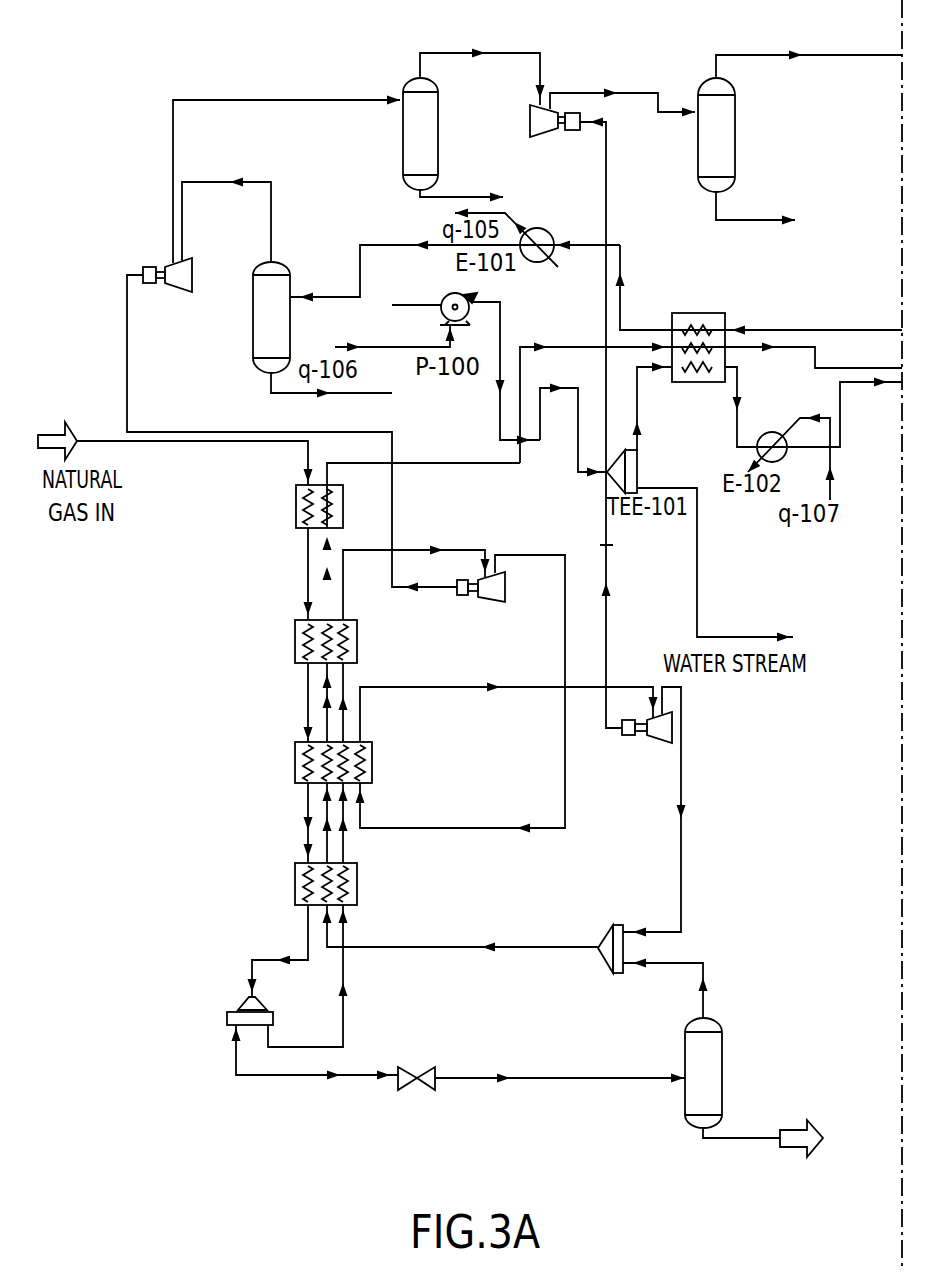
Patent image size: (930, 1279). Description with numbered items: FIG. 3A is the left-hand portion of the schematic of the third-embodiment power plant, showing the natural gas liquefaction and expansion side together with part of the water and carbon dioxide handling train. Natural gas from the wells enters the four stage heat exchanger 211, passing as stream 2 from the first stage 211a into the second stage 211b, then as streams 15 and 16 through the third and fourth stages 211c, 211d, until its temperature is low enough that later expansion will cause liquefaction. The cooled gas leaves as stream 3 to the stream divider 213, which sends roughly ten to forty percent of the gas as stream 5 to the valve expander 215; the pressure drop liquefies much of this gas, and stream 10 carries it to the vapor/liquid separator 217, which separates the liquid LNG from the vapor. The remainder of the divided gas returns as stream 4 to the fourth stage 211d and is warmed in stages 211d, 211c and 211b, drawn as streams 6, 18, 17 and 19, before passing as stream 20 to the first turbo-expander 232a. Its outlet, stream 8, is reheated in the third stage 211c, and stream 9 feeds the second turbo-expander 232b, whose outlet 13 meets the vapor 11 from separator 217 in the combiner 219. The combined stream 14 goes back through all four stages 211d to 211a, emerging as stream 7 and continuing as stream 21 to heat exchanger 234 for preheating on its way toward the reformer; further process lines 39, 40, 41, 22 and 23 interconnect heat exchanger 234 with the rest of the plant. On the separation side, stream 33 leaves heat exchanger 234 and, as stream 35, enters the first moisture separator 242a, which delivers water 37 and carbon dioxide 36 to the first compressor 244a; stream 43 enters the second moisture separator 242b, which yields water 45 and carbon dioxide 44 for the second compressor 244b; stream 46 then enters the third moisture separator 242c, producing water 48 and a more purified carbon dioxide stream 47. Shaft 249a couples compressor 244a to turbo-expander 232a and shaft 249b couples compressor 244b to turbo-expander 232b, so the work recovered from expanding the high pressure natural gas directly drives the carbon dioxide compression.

The natural gas stream 2 is at (316, 575).
The stream 3 is at (278, 953).
The stream 4 is at (316, 976).
The stream 5 is at (315, 1072).
The stream 6 is at (328, 823).
The stream 7 is at (422, 538).
The stream 8 is at (461, 708).
The stream 9 is at (509, 713).
The stream 10 is at (560, 1097).
The stream 11 is at (681, 989).
The stream 13 is at (672, 812).
The stream 14 is at (461, 946).
The stream 15 is at (292, 702).
The stream 16 is at (294, 823).
The stream 17 is at (330, 702).
The stream 18 is at (359, 823).
The stream 19 is at (346, 702).
The stream 20 is at (416, 568).
The stream 21 is at (622, 403).
The stream 22 is at (813, 407).
The steam stream 23 is at (813, 364).
The stream 33 is at (759, 290).
The stream 35 is at (455, 271).
The CO2 stream 36 is at (226, 205).
The water stream 37 is at (326, 400).
The stream 39 is at (503, 373).
The stream 40 is at (565, 430).
The stream 41 is at (658, 412).
The stream 43 is at (286, 180).
The CO2 stream 44 is at (482, 60).
The water stream 45 is at (489, 189).
The stream 46 is at (622, 110).
The CO2 stream 47 is at (809, 53).
The water stream 48 is at (779, 214).
The four stage heat exchanger 211 is at (226, 706).
The first stage of heat exchanger 211a is at (296, 497).
The second stage of heat exchanger 211b is at (295, 633).
The third stage of heat exchanger 211c is at (295, 754).
The fourth stage of heat exchanger 211d is at (295, 876).
The stream divider 213 is at (246, 1003).
The valve expander 215 is at (413, 1066).
The vapor/liquid separator 217 is at (722, 1090).
The combiner 219 is at (609, 928).
The turbo-expander 232a is at (500, 586).
The second turbo-expander 232b is at (667, 728).
The heat exchanger 234 is at (695, 384).
The first moisture separator 242a is at (287, 262).
The second moisture separator 242b is at (408, 79).
The third moisture separator 242c is at (702, 80).
The first compressor 244a is at (174, 266).
The second compressor 244b is at (547, 117).
The shaft 249a is at (127, 346).
The shaft 249b is at (606, 178).